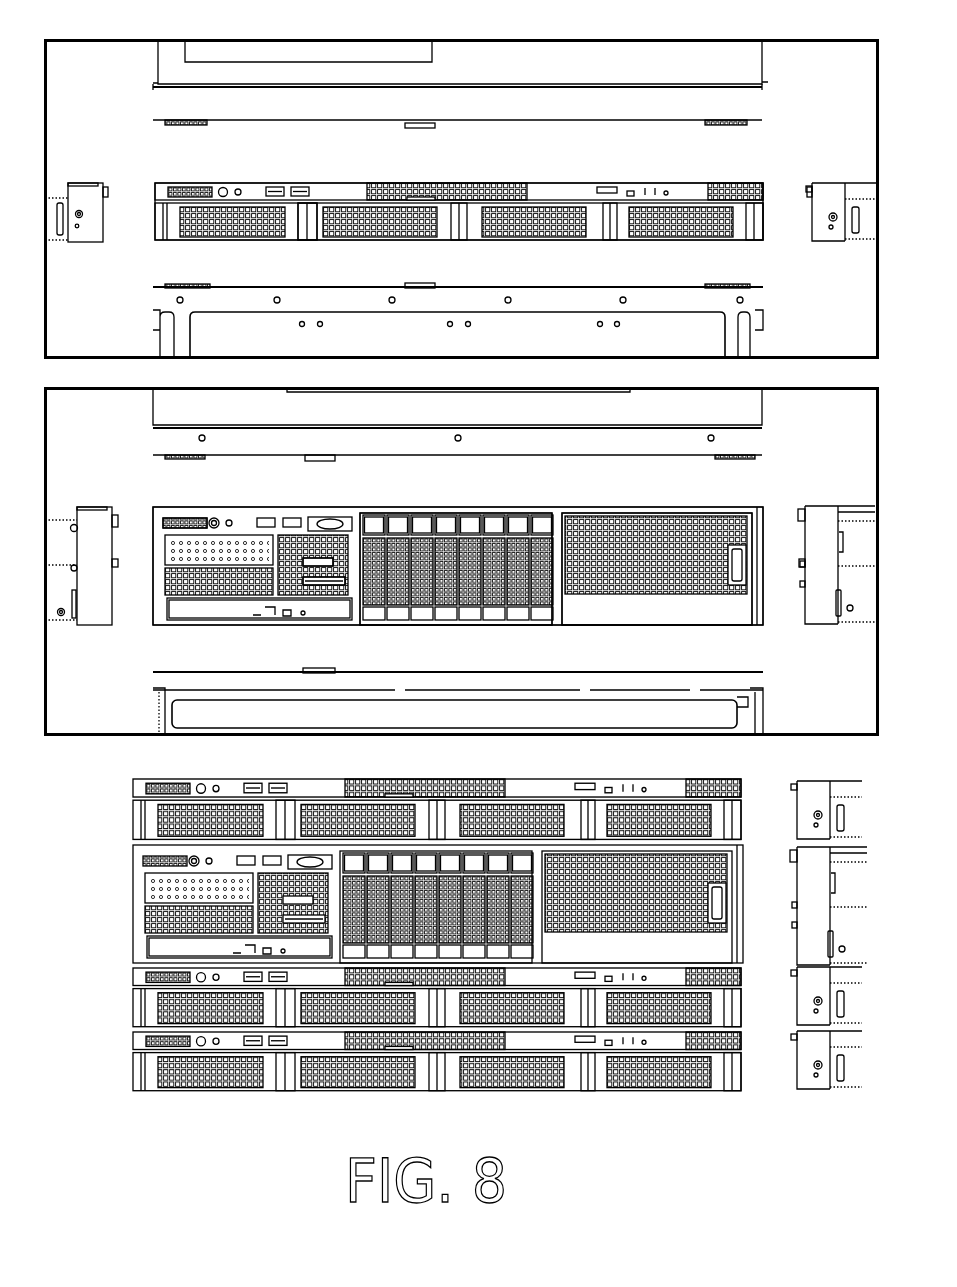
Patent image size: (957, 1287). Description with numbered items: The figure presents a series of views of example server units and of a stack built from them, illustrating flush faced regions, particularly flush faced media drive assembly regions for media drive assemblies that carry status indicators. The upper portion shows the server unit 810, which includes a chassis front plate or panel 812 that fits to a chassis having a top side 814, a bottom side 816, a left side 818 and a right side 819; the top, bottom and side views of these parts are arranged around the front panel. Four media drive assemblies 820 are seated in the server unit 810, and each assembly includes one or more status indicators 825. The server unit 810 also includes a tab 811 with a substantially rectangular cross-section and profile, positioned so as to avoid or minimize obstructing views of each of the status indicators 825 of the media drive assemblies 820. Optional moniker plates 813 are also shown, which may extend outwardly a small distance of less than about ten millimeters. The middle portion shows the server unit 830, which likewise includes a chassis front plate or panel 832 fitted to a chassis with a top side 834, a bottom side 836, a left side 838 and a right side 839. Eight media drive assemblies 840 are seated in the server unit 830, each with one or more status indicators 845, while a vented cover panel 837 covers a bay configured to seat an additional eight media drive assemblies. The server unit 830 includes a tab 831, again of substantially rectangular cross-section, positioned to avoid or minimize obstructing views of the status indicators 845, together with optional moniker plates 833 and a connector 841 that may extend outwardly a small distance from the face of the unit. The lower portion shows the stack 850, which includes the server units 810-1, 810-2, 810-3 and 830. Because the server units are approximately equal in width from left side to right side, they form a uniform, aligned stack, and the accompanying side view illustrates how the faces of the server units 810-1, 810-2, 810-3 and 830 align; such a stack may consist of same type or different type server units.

The server unit 810 is at (110, 82).
The top side 814 is at (530, 74).
The chassis front plate or panel 812 is at (293, 114).
The moniker plates 813 is at (186, 195).
The tab 811 is at (428, 202).
The status indicators 825 is at (306, 238).
The media drive assemblies 820 is at (552, 257).
The left side 818 is at (50, 225).
The right side 819 is at (866, 225).
The bottom side 816 is at (532, 347).
The server unit 830 is at (105, 424).
The top side 834 is at (683, 414).
The chassis front plate or panel 832 is at (333, 447).
The connector 841 is at (340, 460).
The moniker plates 833 is at (186, 519).
The status indicators 845 is at (523, 517).
The vented cover panel 837 is at (646, 519).
The tab 831 is at (118, 566).
The media drive assemblies 840 is at (524, 642).
The left side 838 is at (58, 590).
The right side 839 is at (862, 590).
The bottom side 836 is at (704, 722).
The stack 850 is at (104, 765).
The server unit 810-1 is at (134, 819).
The server unit 810-2 is at (134, 1000).
The server unit 810-3 is at (134, 1061).